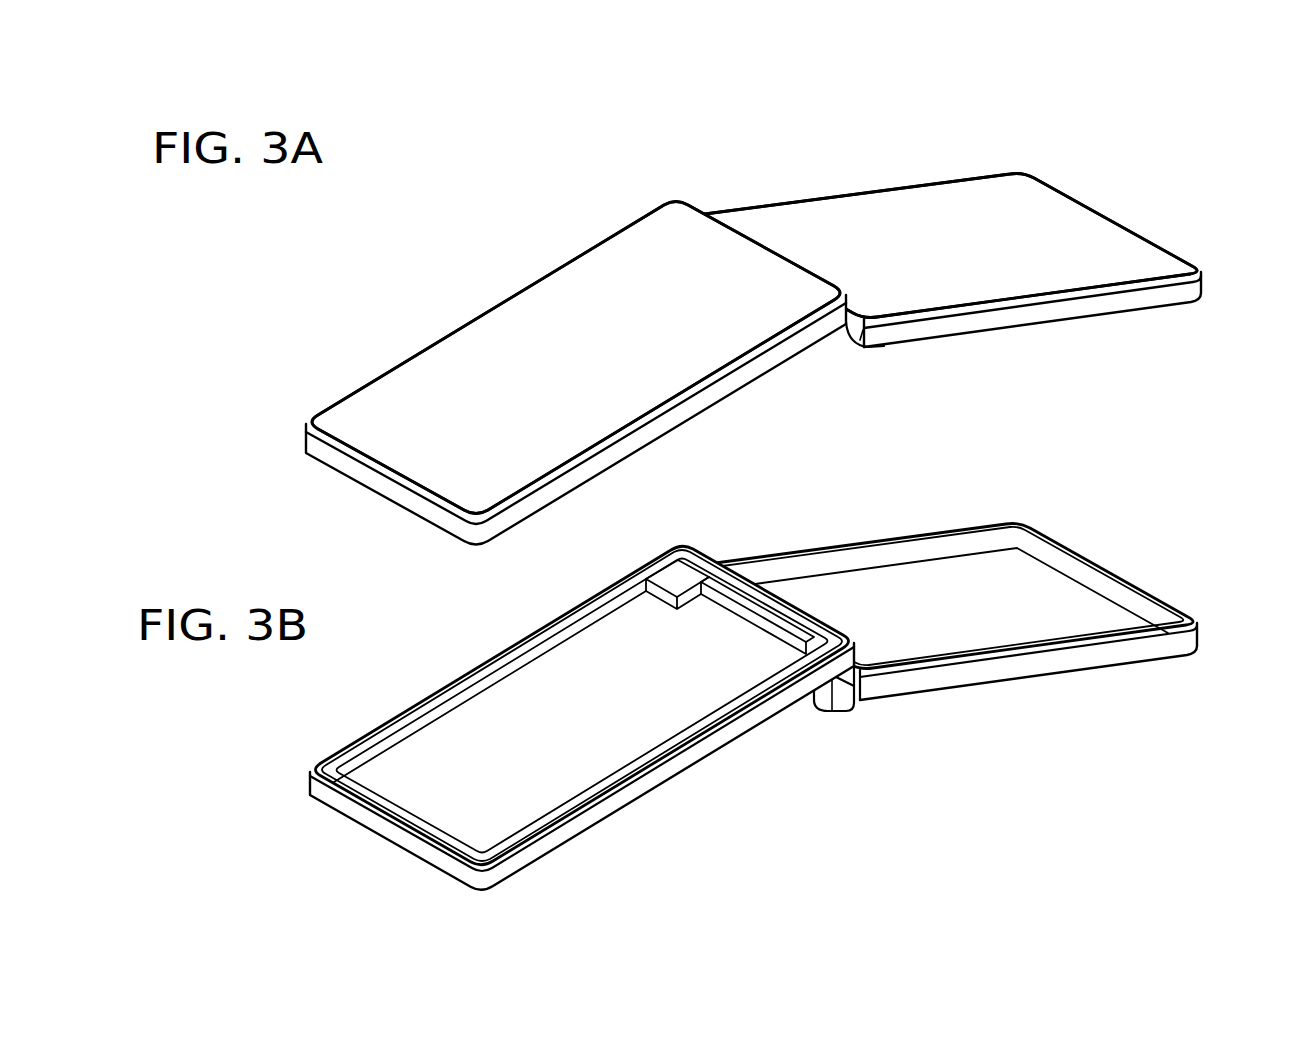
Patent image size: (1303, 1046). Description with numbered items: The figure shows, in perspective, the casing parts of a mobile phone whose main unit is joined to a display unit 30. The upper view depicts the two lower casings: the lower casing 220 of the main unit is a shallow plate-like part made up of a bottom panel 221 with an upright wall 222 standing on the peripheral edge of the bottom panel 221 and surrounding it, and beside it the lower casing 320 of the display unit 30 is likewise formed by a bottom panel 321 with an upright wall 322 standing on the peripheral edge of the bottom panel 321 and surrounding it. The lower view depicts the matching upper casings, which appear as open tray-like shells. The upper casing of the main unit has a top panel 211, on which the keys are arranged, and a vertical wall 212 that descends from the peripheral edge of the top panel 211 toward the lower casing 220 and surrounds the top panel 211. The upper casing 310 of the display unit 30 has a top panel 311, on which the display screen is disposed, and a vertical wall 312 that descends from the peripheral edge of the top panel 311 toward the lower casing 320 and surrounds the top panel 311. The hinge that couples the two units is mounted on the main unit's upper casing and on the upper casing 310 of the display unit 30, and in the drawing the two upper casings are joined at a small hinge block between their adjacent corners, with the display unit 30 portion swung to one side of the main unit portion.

In FIG. 3B, the display unit 30 is at (1075, 692).
In FIG. 3B, the top panel 211 is at (551, 724).
In FIG. 3B, the vertical wall 212 is at (383, 752).
In FIG. 3A, the lower casing 220 is at (535, 349).
In FIG. 3A, the bottom panel 221 is at (524, 317).
In FIG. 3A, the upright wall 222 is at (386, 481).
In FIG. 3B, the upper casing 310 is at (969, 571).
In FIG. 3B, the top panel 311 is at (1060, 595).
In FIG. 3B, the vertical wall 312 is at (958, 525).
In FIG. 3A, the lower casing 320 is at (979, 205).
In FIG. 3A, the bottom panel 321 is at (1058, 215).
In FIG. 3A, the upright wall 322 is at (1120, 302).